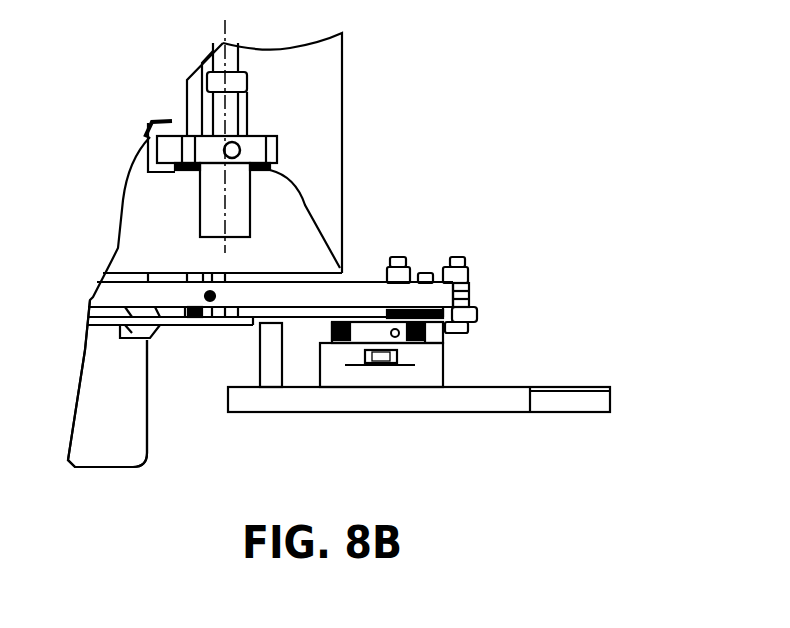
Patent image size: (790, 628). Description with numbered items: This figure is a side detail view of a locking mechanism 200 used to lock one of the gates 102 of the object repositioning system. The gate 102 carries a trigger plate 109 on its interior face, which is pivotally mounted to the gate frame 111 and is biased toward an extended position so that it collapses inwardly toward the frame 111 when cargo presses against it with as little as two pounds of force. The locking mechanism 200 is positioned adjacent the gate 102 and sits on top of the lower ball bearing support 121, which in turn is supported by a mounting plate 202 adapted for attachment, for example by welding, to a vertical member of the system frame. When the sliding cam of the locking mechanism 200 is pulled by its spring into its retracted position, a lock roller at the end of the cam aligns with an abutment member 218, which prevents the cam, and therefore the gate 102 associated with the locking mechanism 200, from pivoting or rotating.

The gate 102 is at (100, 131).
The gate frame 111 is at (328, 118).
The trigger plate 109 is at (102, 412).
The locking mechanism 200 is at (525, 274).
The abutment member 218 is at (265, 352).
The lower ball bearing support 121 is at (430, 372).
The mounting plate 202 is at (492, 402).